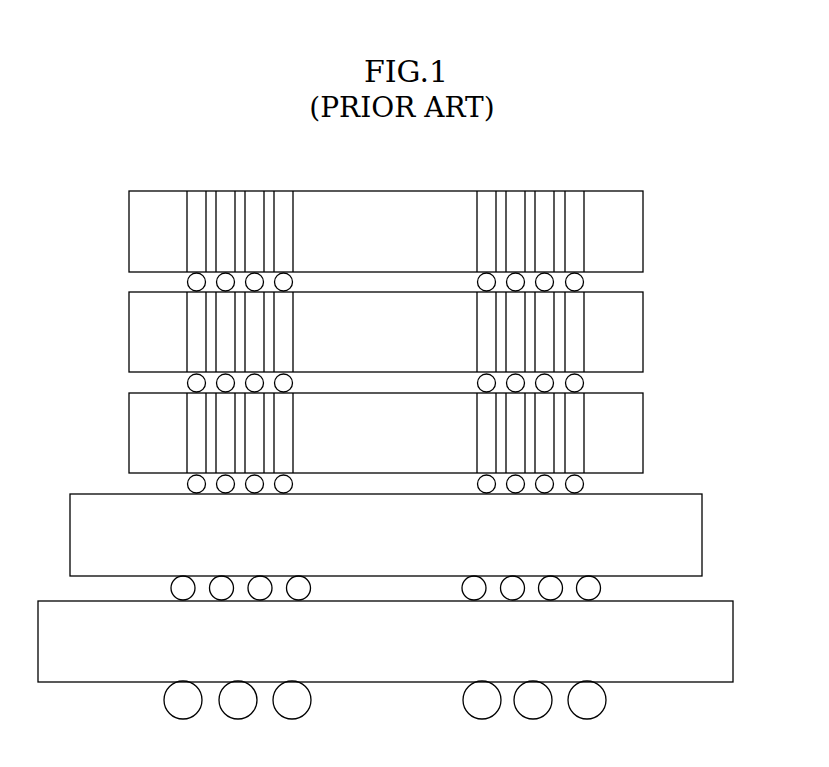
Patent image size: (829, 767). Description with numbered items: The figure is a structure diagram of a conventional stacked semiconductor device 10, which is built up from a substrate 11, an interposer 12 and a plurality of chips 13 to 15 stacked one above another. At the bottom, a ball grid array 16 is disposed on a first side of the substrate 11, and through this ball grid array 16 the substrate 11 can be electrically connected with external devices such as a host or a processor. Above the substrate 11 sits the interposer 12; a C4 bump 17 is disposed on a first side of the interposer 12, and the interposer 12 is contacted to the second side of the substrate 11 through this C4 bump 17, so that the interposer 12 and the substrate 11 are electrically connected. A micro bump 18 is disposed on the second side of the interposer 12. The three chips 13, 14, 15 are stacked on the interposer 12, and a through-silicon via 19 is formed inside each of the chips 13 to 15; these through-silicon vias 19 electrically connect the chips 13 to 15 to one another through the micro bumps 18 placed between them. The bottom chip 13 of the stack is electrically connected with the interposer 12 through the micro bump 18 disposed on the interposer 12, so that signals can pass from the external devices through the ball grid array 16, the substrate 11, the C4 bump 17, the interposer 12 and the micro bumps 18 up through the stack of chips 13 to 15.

The stacked semiconductor device 10 is at (162, 152).
The substrate 11 is at (733, 641).
The interposer 12 is at (702, 533).
The bottom chip 13 is at (643, 432).
The chip 14 is at (643, 331).
The chip 15 is at (643, 229).
The ball grid array 16 is at (606, 697).
The C4 bump 17 is at (600, 587).
The micro bump 18 is at (584, 281).
The through-silicon via 19 is at (283, 195).